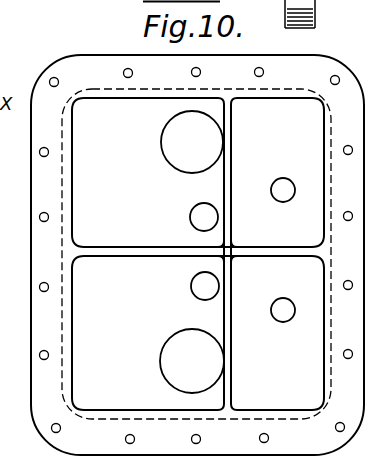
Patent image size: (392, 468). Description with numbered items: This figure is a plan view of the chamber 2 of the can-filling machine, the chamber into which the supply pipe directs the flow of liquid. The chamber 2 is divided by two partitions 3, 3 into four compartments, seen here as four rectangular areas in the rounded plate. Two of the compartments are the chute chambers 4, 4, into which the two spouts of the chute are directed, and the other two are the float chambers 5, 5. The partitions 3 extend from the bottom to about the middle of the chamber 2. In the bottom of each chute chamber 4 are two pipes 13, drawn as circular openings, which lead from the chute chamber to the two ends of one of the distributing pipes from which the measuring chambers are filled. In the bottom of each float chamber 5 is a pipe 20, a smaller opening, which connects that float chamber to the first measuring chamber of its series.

The chamber 2 is at (38, 226).
The partitions 3 is at (148, 250).
The chute chambers 4 is at (148, 254).
The float chambers 5 is at (277, 254).
The pipes 13 is at (192, 252).
The pipe 20 is at (283, 250).